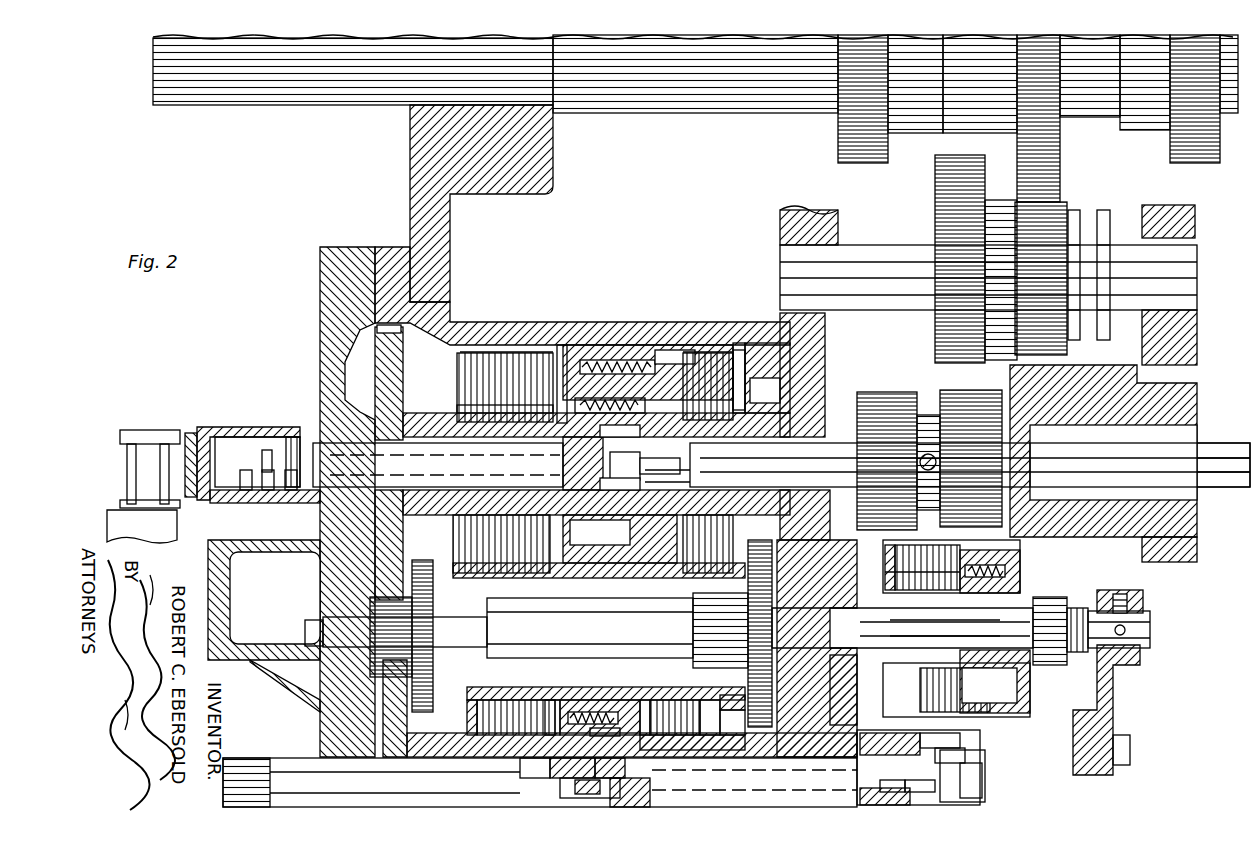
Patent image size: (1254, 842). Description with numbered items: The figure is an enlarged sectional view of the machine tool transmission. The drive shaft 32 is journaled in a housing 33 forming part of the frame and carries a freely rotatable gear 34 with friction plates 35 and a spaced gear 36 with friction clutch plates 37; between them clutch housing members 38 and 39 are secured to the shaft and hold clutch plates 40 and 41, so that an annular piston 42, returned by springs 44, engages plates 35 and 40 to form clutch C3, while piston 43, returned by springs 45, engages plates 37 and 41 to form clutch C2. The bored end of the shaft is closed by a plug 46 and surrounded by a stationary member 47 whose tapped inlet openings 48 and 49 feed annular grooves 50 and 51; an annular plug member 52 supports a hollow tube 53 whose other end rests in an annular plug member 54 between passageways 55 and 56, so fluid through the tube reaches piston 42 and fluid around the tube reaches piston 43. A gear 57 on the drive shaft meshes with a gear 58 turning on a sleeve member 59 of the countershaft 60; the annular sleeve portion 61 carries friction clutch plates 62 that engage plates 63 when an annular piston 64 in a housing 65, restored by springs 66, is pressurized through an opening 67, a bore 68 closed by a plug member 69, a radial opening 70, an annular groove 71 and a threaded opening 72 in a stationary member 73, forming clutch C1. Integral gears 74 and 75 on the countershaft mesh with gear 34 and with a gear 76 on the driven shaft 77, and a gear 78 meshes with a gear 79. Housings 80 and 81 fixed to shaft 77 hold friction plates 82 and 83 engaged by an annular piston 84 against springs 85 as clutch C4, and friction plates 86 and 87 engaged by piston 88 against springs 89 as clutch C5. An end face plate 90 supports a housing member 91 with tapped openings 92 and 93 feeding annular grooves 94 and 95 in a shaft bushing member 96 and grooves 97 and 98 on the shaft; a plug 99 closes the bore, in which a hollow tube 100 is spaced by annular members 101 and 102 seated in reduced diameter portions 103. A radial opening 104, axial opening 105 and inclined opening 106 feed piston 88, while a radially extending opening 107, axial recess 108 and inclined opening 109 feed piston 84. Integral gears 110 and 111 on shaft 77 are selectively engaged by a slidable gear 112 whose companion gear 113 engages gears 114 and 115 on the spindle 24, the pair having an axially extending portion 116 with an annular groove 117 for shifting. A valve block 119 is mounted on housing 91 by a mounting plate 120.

The spindle 24 is at (745, 108).
The gear 115 is at (862, 168).
The gear 114 is at (1060, 138).
The gear 112 is at (940, 176).
The gear 113 is at (1072, 212).
The annular groove 117 is at (1103, 212).
The axially extending portion 116 is at (1142, 215).
The end face plate 90 is at (330, 335).
The housing member 91 is at (292, 562).
The gear 76 is at (402, 392).
The housing 33 is at (630, 306).
The gear 79 is at (765, 369).
The friction plates 87 is at (745, 360).
The fluid actuated clutch C4 is at (510, 348).
The friction plates 82 is at (458, 352).
The annular piston 84 is at (560, 345).
The friction plates 83 is at (457, 406).
The clutch housing 80 is at (560, 340).
The clutch housing 81 is at (668, 348).
The springs 85 is at (610, 400).
The fluid actuated clutch C5 is at (706, 347).
The annular piston 88 is at (695, 348).
The friction plates 86 is at (718, 348).
The hollow tube 100 is at (470, 455).
The springs 89 is at (700, 445).
The driven shaft 77 is at (845, 440).
The radial opening 104 is at (600, 450).
The inclined opening 106 is at (640, 433).
The axially extending opening 105 is at (640, 452).
The reduced diameter portions 103 is at (668, 460).
The annular member 102 is at (688, 470).
The radially extending opening 107 is at (690, 484).
The axial recess 108 is at (606, 486).
The inclined opening 109 is at (610, 520).
The gear 74 is at (428, 546).
The shaft bushing member 96 is at (214, 434).
The tapped opening 92 is at (236, 440).
The plug 99 is at (190, 455).
The annular member 101 is at (267, 450).
The tapped opening 93 is at (292, 437).
The annular groove 94 is at (240, 503).
The annular groove 97 is at (250, 490).
The annular groove 95 is at (270, 490).
The annular groove 98 is at (292, 490).
The mounting plate 120 is at (190, 525).
The valve block 119 is at (107, 507).
The gear 111 is at (895, 400).
The gear 110 is at (990, 400).
The countershaft 60 is at (632, 606).
The gear 75 is at (392, 680).
The gear 78 is at (748, 584).
The gear 34 is at (402, 726).
The friction plates 35 is at (467, 710).
The fluid actuated clutch C3 is at (540, 695).
The clutch plates 40 is at (505, 687).
The annular piston 42 is at (552, 700).
The clutch housing member 38 is at (582, 700).
The clutch housing member 39 is at (605, 728).
The annular piston 43 is at (646, 700).
The friction clutch plates 37 is at (678, 700).
The fluid actuated clutch C2 is at (690, 695).
The clutch plates 41 is at (752, 692).
The gear 36 is at (751, 710).
The springs 45 is at (698, 748).
The drive shaft 32 is at (290, 758).
The springs 44 is at (530, 762).
The passageway 55 is at (580, 762).
The passageway 56 is at (615, 762).
The hollow tube 53 is at (560, 785).
The annular plug member 54 is at (612, 795).
The annular groove 50 is at (984, 792).
The gear 58 is at (845, 572).
The sleeve member 59 is at (838, 668).
The gear 57 is at (816, 750).
The fluid operated clutch C1 is at (940, 612).
The housing 65 is at (1030, 695).
The annular sleeve portion 61 is at (965, 549).
The friction clutch plates 62 is at (885, 555).
The friction clutch plates 63 is at (885, 575).
The annular piston 64 is at (1020, 560).
The springs 66 is at (990, 620).
The bore 68 is at (990, 636).
The opening 67 is at (1052, 583).
The stationary member 73 is at (1085, 605).
The threaded opening 72 is at (1140, 590).
The annular groove 71 is at (1150, 615).
The plug member 69 is at (1150, 625).
The radial opening 70 is at (1125, 633).
The tapped inlet opening 49 is at (882, 726).
The tapped inlet opening 48 is at (960, 740).
The stationary member 47 is at (965, 755).
The plug 46 is at (982, 780).
The annular groove 51 is at (892, 792).
The annular plug member 52 is at (920, 792).